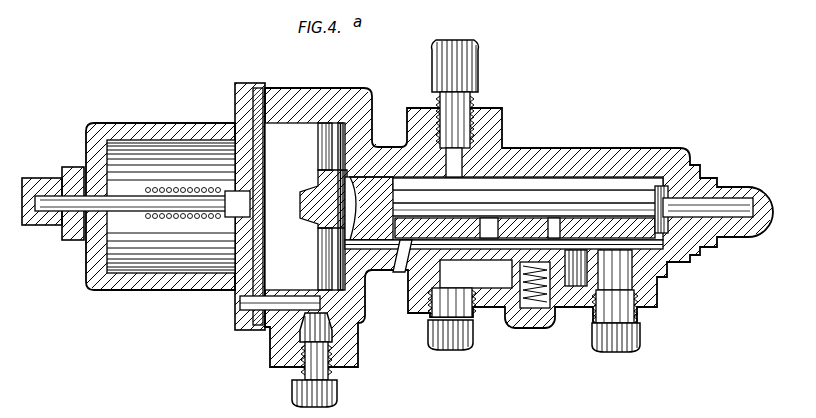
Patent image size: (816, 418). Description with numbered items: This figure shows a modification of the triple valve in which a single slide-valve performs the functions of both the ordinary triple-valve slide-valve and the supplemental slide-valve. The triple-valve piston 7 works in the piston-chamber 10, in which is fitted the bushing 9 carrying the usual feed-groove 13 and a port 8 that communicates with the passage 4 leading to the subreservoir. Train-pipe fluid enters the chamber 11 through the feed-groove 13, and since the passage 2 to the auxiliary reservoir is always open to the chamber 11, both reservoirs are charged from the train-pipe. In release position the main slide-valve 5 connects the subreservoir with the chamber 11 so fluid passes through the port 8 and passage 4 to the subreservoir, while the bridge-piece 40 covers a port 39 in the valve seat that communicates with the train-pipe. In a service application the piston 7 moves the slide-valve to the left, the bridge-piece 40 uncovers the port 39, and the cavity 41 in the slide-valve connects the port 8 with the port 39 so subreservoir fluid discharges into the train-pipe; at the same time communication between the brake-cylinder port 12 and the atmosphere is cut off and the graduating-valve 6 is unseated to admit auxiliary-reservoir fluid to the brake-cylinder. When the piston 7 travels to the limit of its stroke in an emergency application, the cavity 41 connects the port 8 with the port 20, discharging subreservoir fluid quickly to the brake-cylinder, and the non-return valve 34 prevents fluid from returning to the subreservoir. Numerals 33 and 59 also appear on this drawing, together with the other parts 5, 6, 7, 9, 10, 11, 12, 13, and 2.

The passage 2 is at (455, 108).
The passage 4 is at (616, 301).
The main slide-valve 5 is at (470, 305).
The graduating-valve 6 is at (428, 232).
The piston 7 is at (322, 246).
The port 8 is at (596, 258).
The bushing 9 is at (288, 127).
The piston-chamber 10 is at (162, 219).
The chamber 11 is at (372, 246).
The brake-cylinder port 12 is at (400, 240).
The feed-groove 13 is at (330, 127).
The port 20 is at (504, 253).
The valve stem 33 is at (528, 195).
The non-return valve 34 is at (514, 285).
The port 39 is at (612, 260).
The bridge-piece 40 is at (625, 209).
The cavity 41 is at (592, 232).
The sleeve 59 is at (525, 229).